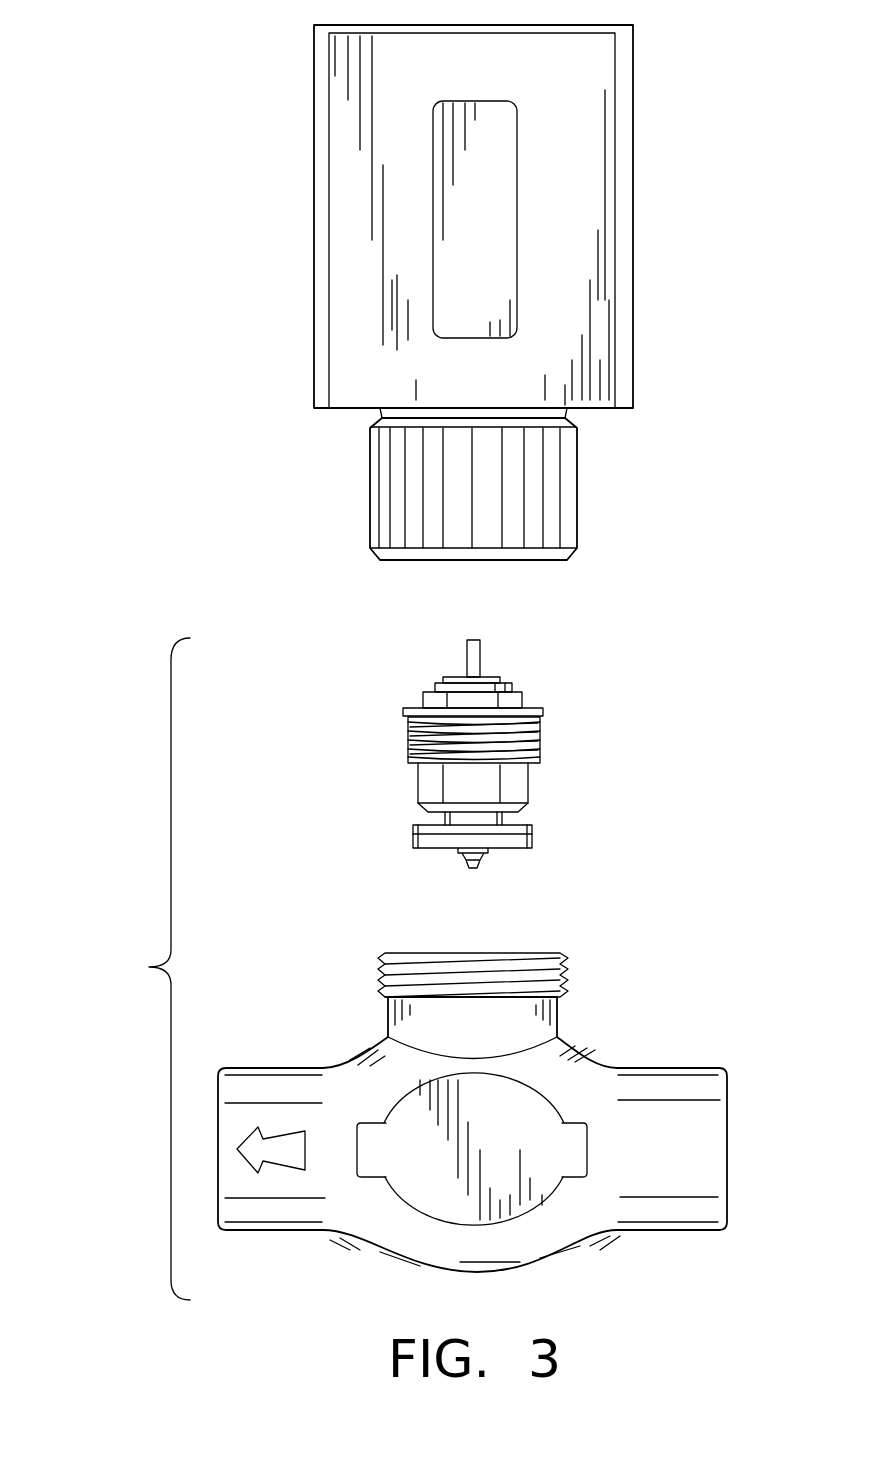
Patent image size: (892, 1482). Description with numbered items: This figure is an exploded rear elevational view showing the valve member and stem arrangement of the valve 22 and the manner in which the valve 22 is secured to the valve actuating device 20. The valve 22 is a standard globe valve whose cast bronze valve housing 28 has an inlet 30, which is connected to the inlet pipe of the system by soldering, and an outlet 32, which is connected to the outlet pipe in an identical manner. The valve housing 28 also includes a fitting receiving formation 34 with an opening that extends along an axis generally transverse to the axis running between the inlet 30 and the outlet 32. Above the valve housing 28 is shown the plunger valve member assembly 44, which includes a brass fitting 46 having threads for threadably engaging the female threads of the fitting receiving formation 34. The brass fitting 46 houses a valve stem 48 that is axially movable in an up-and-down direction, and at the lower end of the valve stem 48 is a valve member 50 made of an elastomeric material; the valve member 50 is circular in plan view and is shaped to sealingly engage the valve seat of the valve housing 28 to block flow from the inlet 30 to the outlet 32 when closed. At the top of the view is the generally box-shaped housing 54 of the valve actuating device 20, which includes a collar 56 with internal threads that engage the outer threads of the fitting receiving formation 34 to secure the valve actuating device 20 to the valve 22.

The valve actuating device 20 is at (684, 216).
The valve 22 is at (135, 990).
The valve housing 28 is at (600, 1043).
The inlet 30 is at (725, 1145).
The outlet 32 is at (207, 1181).
The fitting receiving formation 34 is at (397, 1027).
The plunger valve member assembly 44 is at (560, 749).
The brass fitting 46 is at (445, 783).
The valve stem 48 is at (477, 638).
The valve member 50 is at (533, 843).
The housing 54 is at (296, 159).
The collar 56 is at (492, 490).